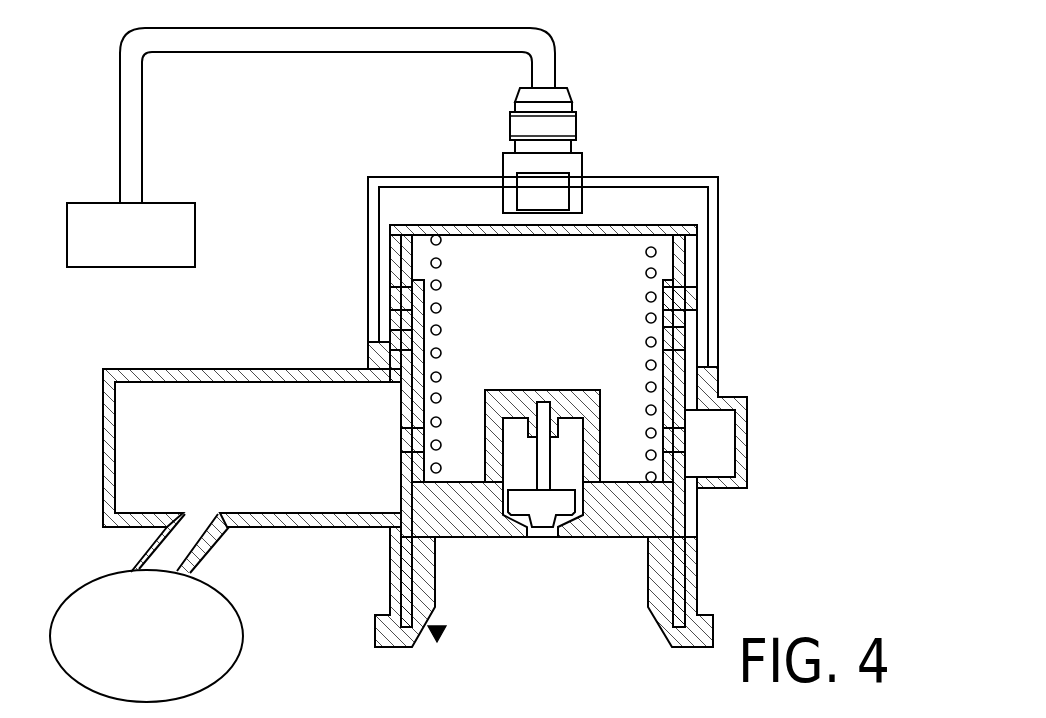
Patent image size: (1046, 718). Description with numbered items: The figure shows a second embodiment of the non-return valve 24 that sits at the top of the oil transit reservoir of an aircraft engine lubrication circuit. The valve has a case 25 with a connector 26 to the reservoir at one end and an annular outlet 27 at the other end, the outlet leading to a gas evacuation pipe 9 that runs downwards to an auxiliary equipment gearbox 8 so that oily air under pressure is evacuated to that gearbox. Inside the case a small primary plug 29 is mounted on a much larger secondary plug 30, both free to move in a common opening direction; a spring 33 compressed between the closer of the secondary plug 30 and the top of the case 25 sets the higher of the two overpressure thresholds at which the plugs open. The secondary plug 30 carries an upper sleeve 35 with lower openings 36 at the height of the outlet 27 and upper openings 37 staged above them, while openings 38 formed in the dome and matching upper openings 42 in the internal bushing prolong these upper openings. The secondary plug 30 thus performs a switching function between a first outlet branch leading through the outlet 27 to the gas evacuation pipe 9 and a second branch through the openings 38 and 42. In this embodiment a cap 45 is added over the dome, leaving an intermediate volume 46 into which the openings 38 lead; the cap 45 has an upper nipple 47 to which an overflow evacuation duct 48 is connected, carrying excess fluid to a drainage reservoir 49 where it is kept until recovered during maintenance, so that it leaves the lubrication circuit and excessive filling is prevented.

The auxiliary equipment gearbox 8 is at (103, 577).
The gas evacuation pipe 9 is at (203, 543).
The non-return valve 24 is at (306, 305).
The case 25 is at (710, 347).
The connector 26 is at (446, 637).
The annular outlet 27 is at (252, 448).
The primary plug 29 is at (537, 536).
The secondary plug 30 is at (600, 536).
The spring 33 is at (647, 317).
The upper sleeve 35 is at (415, 297).
The openings 36 is at (418, 435).
The openings 37 is at (418, 335).
The openings 38 is at (692, 297).
The upper openings 42 is at (675, 288).
The cap 45 is at (445, 185).
The intermediate volume 46 is at (402, 207).
The upper nipple 47 is at (558, 105).
The overflow evacuation duct 48 is at (268, 52).
The drainage reservoir 49 is at (195, 210).